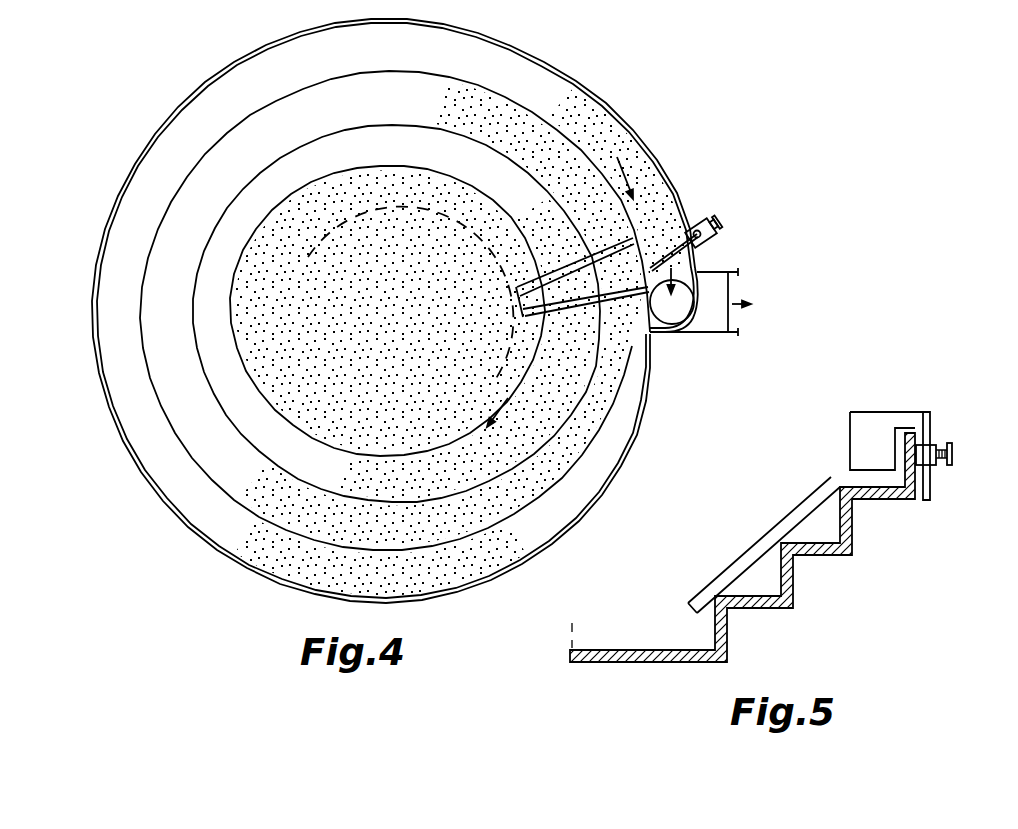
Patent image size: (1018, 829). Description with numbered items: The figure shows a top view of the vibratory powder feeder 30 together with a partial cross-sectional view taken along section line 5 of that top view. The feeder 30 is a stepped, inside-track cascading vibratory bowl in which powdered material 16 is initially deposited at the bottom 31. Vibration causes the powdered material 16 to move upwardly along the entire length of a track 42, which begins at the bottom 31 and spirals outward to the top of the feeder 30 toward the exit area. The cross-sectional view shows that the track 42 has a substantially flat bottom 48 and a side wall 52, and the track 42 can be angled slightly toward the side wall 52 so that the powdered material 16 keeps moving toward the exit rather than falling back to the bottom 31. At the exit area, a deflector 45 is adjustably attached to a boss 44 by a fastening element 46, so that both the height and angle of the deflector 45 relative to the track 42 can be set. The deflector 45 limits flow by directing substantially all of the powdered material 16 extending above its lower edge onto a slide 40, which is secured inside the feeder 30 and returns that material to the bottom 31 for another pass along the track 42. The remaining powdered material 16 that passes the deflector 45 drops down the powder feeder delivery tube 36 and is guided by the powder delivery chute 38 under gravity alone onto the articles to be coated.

In FIG. 4, the vibratory powder feeder 30 is at (242, 565).
In FIG. 5, the vibratory powder feeder 30 is at (1008, 371).
In FIG. 4, the powdered material 16 is at (570, 490).
In FIG. 4, the track 42 is at (507, 237).
In FIG. 4, the bottom 31 is at (394, 308).
In FIG. 4, the slide 40 is at (612, 245).
In FIG. 5, the slide 40 is at (777, 523).
In FIG. 4, the deflector 45 is at (664, 256).
In FIG. 5, the deflector 45 is at (872, 412).
In FIG. 4, the boss 44 is at (700, 222).
In FIG. 5, the boss 44 is at (936, 463).
In FIG. 4, the fastening element 46 is at (718, 225).
In FIG. 5, the fastening element 46 is at (950, 445).
In FIG. 4, the powder feeder delivery tube 36 is at (668, 322).
In FIG. 4, the powder delivery chute 38 is at (718, 333).
In FIG. 4, the section line 5 is at (750, 240).
In FIG. 5, the flat bottom 48 is at (875, 500).
In FIG. 5, the side wall 52 is at (793, 590).